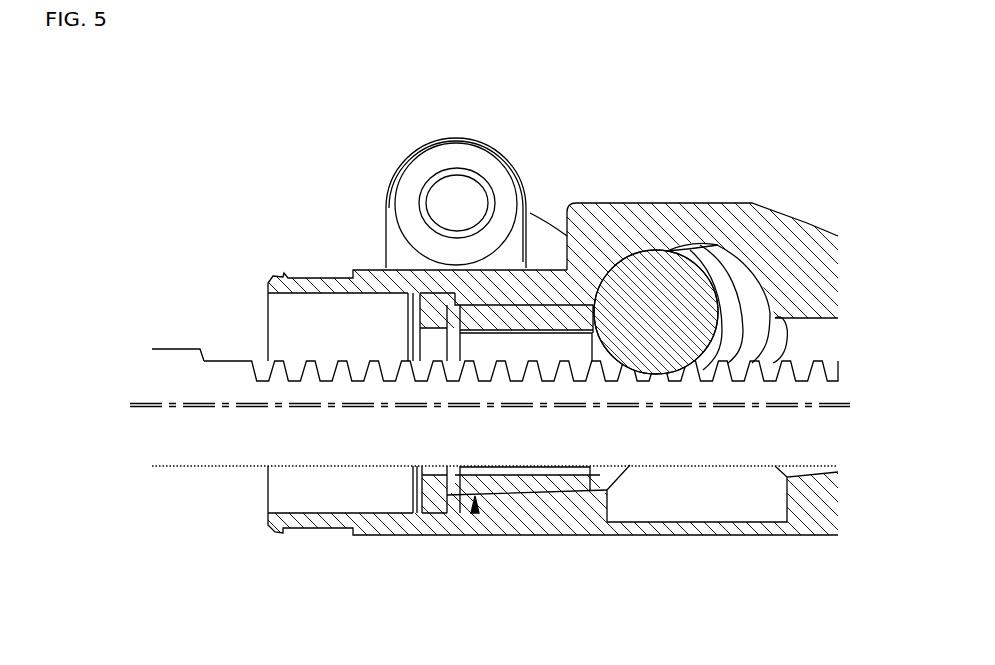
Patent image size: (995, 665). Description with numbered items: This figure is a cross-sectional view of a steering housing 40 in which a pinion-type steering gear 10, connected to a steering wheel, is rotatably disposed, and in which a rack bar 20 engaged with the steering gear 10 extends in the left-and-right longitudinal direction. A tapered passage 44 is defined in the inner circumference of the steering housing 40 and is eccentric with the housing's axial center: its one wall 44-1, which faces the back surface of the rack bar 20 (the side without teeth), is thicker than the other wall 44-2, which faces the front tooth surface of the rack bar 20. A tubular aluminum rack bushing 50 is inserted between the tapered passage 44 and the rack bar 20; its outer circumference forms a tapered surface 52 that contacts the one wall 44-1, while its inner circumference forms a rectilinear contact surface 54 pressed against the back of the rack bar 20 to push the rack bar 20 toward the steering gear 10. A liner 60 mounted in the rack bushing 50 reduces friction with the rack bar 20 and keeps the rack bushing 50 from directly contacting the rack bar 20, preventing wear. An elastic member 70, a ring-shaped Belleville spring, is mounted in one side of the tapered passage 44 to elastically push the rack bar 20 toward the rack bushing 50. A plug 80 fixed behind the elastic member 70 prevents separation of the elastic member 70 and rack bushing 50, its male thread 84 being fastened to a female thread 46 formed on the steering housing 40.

The steering gear 10 is at (682, 280).
The rack bar 20 is at (700, 453).
The steering housing 40 is at (686, 204).
The tapered passage 44 is at (537, 307).
The one wall of the tapered passage 44-1 is at (562, 507).
The other wall of the tapered passage 44-2 is at (572, 297).
The female thread 46 is at (420, 512).
The rack bushing 50 is at (475, 512).
The tapered surface 52 is at (523, 300).
The rectilinear contact surface 54 is at (478, 336).
The liner 60 is at (572, 473).
The elastic member 70 is at (453, 318).
The plug 80 is at (427, 490).
The male thread 84 is at (442, 513).